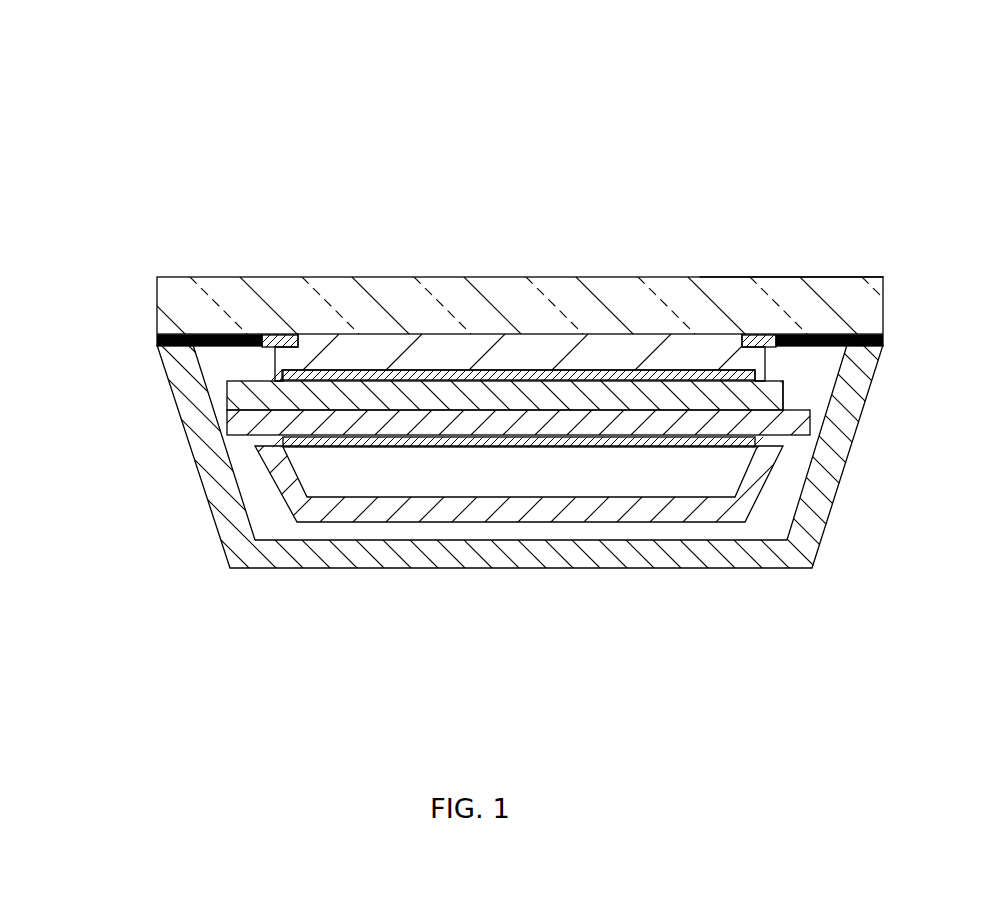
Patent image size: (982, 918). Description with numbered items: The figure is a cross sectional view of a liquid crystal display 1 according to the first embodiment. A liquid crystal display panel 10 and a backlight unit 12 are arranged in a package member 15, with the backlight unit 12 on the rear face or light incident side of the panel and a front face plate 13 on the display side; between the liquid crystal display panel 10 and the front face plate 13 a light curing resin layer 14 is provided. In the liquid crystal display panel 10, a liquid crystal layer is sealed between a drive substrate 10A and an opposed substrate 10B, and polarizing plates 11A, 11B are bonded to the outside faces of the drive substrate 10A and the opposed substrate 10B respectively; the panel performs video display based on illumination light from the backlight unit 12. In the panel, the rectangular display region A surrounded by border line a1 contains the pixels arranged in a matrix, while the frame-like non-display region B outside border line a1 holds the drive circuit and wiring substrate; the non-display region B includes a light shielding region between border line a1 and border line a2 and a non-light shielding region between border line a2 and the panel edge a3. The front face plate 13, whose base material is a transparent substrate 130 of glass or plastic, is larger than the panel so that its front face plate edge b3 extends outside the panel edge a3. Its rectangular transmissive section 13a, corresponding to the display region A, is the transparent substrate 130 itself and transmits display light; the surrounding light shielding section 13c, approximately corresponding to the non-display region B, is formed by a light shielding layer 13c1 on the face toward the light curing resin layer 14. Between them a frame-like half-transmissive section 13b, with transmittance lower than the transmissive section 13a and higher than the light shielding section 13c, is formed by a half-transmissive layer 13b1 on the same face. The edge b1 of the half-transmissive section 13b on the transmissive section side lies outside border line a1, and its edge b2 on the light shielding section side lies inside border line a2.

The liquid crystal display 1 is at (229, 160).
The liquid crystal display panel 10 is at (790, 377).
The drive substrate 10A is at (805, 422).
The opposed substrate 10B is at (766, 393).
The polarizing plate 11A is at (678, 452).
The polarizing plate 11B is at (601, 366).
The backlight unit 12 is at (538, 508).
The front face plate 13 is at (890, 312).
The transparent substrate 130 is at (826, 277).
The transmissive section 13a is at (742, 346).
The half-transmissive section 13b is at (775, 346).
The light shielding section 13c is at (880, 277).
The half-transmissive layer 13b1 is at (273, 349).
The light shielding layer 13c1 is at (157, 340).
The light curing resin layer 14 is at (437, 344).
The package member 15 is at (395, 560).
The border line a1 is at (307, 380).
The border line a2 is at (261, 458).
The panel edge a3 is at (228, 497).
The edge b1 is at (295, 233).
The edge b2 is at (262, 345).
The front face plate edge b3 is at (157, 277).
The display region A is at (735, 380).
The non-display region B is at (306, 671).